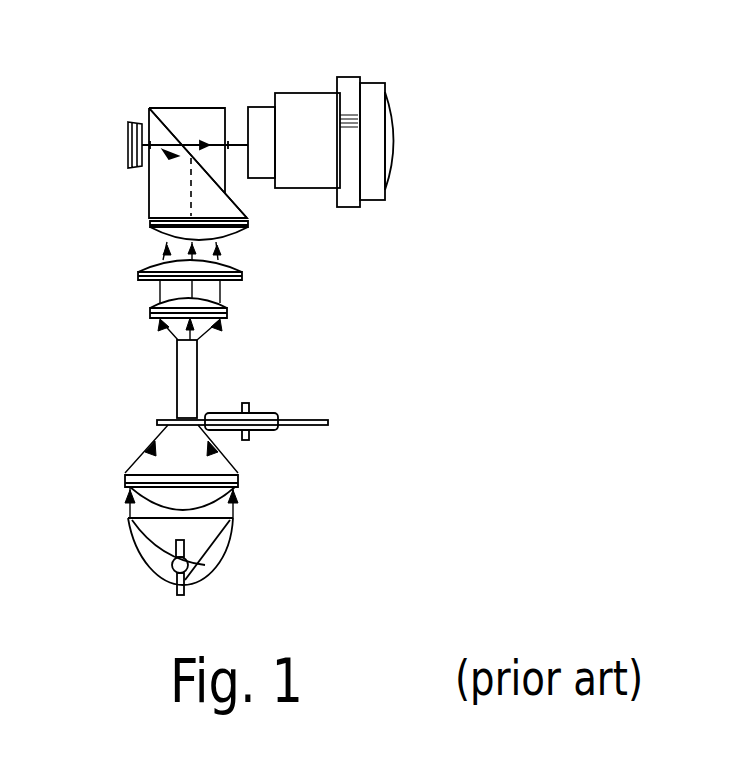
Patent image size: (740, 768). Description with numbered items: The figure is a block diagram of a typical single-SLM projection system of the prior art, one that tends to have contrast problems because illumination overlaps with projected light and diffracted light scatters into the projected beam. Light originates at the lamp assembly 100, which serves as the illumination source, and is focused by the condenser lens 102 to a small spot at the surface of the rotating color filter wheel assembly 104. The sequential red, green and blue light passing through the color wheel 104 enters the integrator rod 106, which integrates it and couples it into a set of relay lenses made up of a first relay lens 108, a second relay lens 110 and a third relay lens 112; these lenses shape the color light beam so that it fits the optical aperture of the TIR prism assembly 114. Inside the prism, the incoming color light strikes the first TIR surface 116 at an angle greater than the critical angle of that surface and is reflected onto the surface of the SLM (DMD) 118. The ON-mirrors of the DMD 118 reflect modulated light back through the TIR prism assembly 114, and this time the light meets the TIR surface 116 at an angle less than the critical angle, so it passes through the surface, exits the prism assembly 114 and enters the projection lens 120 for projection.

The lamp assembly 100 is at (223, 545).
The condenser lens 102 is at (240, 477).
The rotating color filter wheel assembly 104 is at (290, 418).
The integrator rod 106 is at (197, 372).
The first relay lens 108 is at (227, 310).
The second relay lens 110 is at (242, 272).
The third relay lens 112 is at (247, 225).
The TIR prism assembly 114 is at (149, 193).
The first TIR surface 116 is at (167, 122).
The SLM (DMD) 118 is at (125, 128).
The projection lens 120 is at (308, 92).